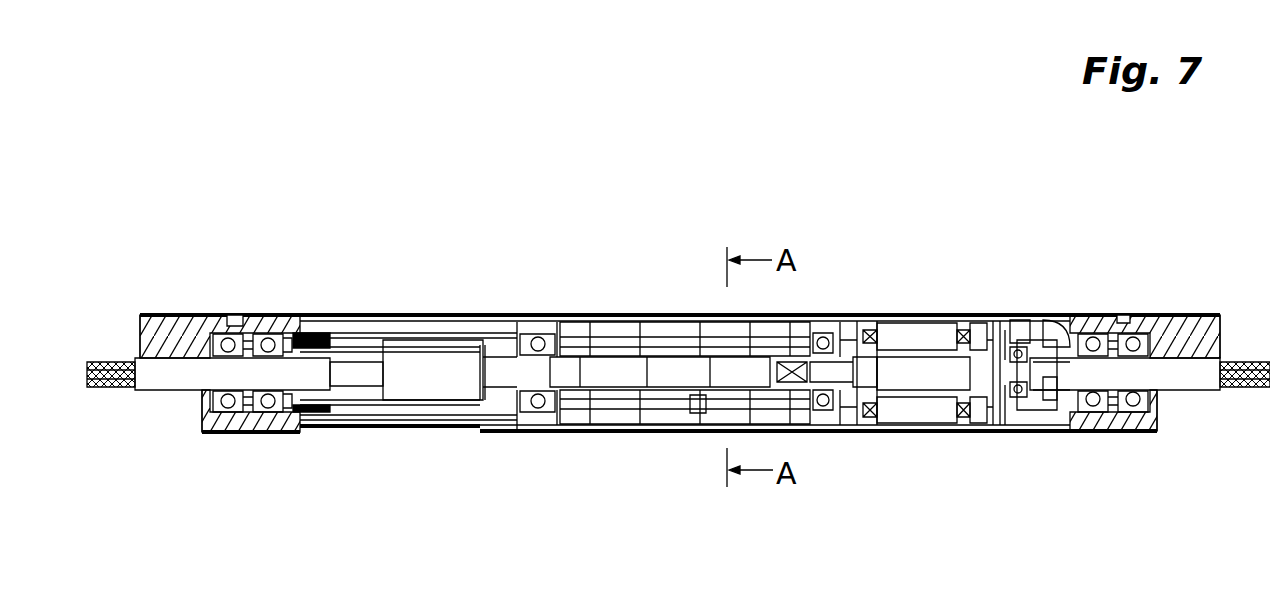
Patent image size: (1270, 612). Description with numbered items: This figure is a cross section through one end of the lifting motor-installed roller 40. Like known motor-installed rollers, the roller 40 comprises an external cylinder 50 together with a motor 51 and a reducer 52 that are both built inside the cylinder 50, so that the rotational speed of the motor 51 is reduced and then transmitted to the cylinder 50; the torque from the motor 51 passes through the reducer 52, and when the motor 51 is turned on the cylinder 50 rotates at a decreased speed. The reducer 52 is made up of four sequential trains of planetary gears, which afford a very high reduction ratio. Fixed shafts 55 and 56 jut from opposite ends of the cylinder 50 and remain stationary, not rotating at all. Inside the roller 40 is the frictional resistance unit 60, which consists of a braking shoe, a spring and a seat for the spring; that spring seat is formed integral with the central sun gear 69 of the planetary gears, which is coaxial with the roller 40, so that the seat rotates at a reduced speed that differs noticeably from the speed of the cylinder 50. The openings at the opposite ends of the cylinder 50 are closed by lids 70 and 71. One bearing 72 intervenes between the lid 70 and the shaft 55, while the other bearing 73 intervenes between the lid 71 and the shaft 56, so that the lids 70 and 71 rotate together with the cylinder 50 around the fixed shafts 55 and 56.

The lifting motor-installed roller 40 is at (918, 292).
The cylinder 50 is at (385, 313).
The motor 51 is at (927, 410).
The reducer 52 is at (580, 397).
The fixed shaft 55 is at (170, 370).
The fixed shaft 56 is at (1190, 375).
The frictional resistance unit 60 is at (677, 420).
The sun gear 69 is at (665, 372).
The lid 70 is at (230, 418).
The lid 71 is at (1108, 412).
The bearing 72 is at (227, 345).
The bearing 73 is at (1091, 340).